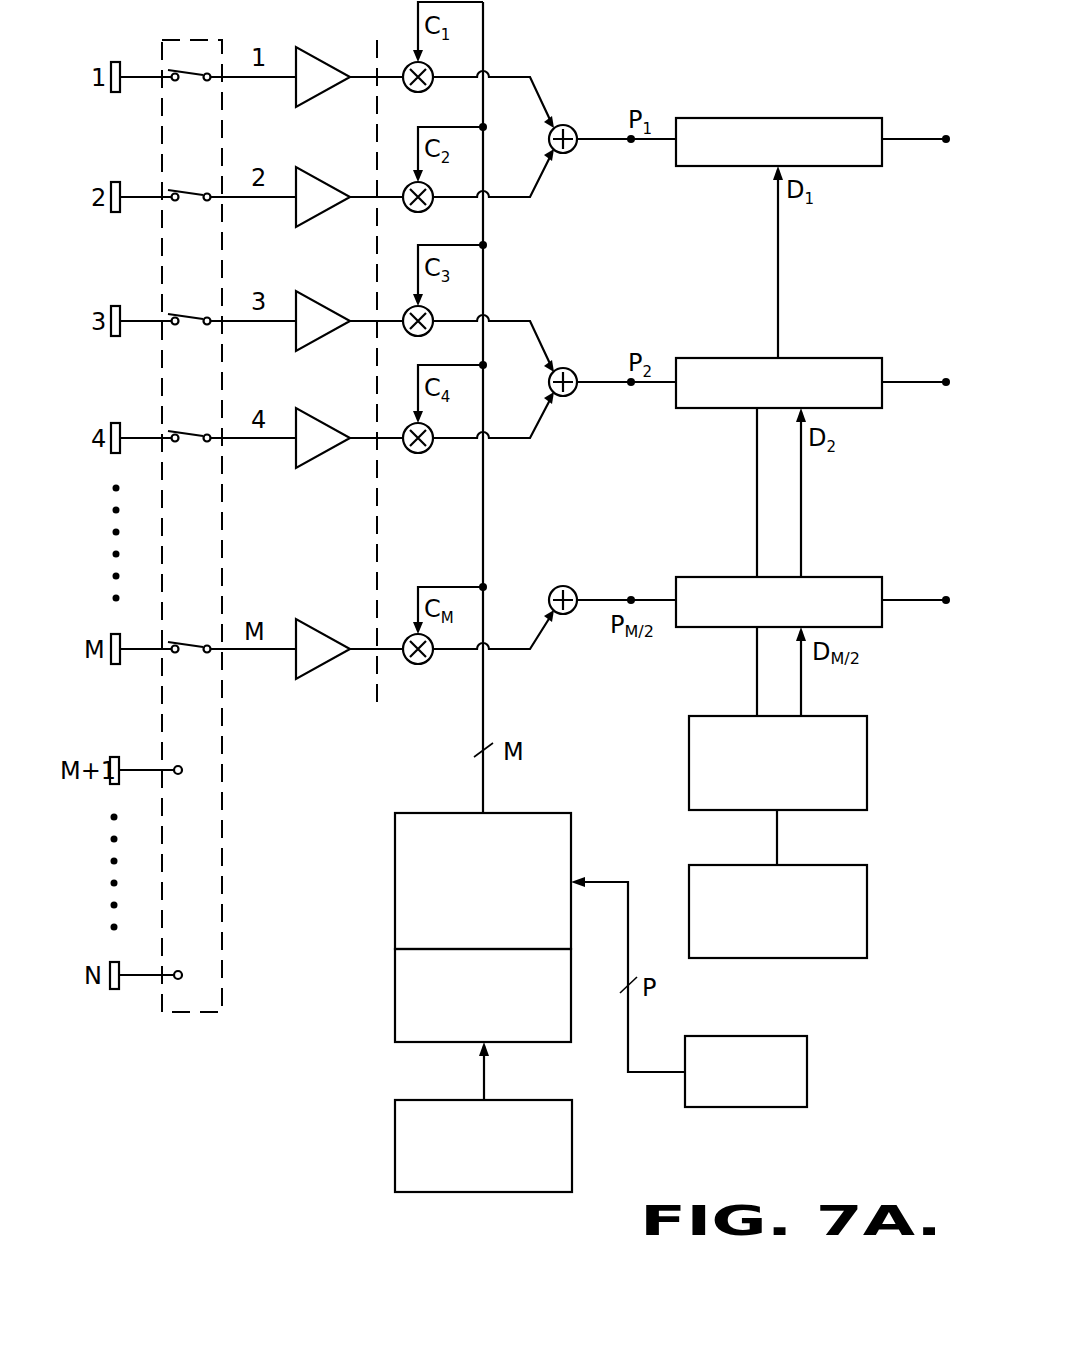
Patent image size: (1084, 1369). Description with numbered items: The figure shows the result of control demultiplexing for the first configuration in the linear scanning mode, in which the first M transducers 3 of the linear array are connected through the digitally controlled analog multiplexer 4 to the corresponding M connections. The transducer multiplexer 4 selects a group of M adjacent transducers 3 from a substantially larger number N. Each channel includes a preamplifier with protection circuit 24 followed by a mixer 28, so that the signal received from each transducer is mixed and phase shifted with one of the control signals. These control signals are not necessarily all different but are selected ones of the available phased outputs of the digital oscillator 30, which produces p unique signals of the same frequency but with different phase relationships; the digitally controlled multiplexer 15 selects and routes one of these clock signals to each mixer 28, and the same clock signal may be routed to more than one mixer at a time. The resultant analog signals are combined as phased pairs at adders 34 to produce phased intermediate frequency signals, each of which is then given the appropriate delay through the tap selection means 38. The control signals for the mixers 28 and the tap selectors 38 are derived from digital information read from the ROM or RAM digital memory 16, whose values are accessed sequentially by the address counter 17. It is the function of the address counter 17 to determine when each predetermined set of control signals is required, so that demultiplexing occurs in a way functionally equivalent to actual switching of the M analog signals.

The transducers 3 is at (113, 990).
The digitally controlled analog multiplexer 4 is at (224, 1012).
The digitally controlled multiplexer 15 is at (395, 896).
The ROM or RAM digital memory 16 is at (867, 767).
The address counter 17 is at (867, 918).
The preamplifier with protection circuit 24 is at (304, 62).
The mixer 28 is at (411, 93).
The oscillator 30 is at (807, 1070).
The adder 34 is at (570, 126).
The tap selector 38 is at (802, 114).